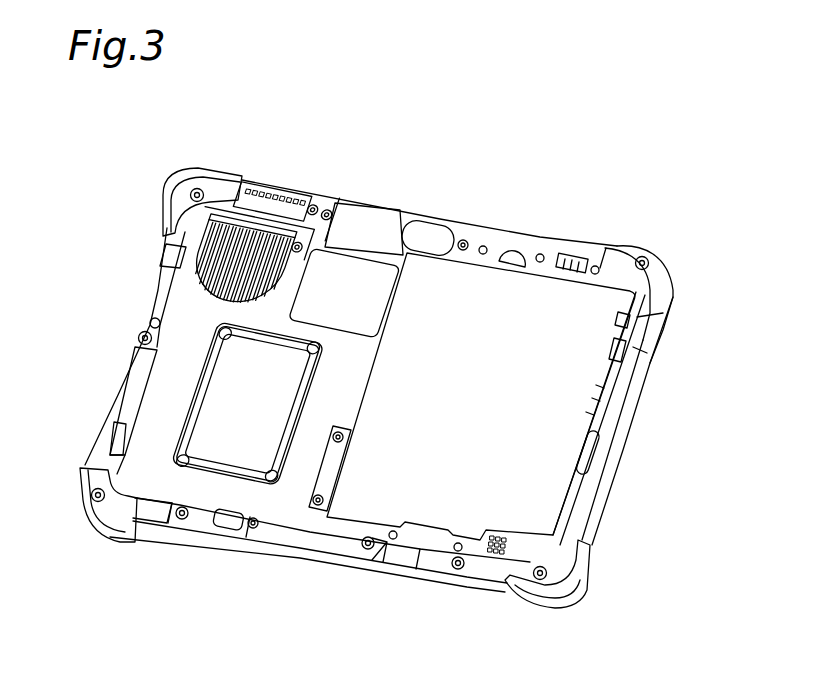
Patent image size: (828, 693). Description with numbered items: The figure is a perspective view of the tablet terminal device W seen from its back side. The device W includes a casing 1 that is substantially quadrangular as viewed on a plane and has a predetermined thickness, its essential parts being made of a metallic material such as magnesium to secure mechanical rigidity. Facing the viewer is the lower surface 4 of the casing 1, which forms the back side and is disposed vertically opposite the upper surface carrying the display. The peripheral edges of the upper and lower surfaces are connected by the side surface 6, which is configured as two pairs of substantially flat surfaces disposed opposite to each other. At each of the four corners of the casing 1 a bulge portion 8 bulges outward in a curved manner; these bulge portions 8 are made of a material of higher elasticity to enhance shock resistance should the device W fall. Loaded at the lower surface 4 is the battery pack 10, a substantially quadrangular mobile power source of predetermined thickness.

The casing 1 is at (138, 322).
The lower surface 4 is at (210, 507).
The side surface 6 is at (433, 217).
The bulge portion 8 is at (178, 187).
The battery pack 10 is at (543, 385).
The tablet terminal device W is at (393, 207).